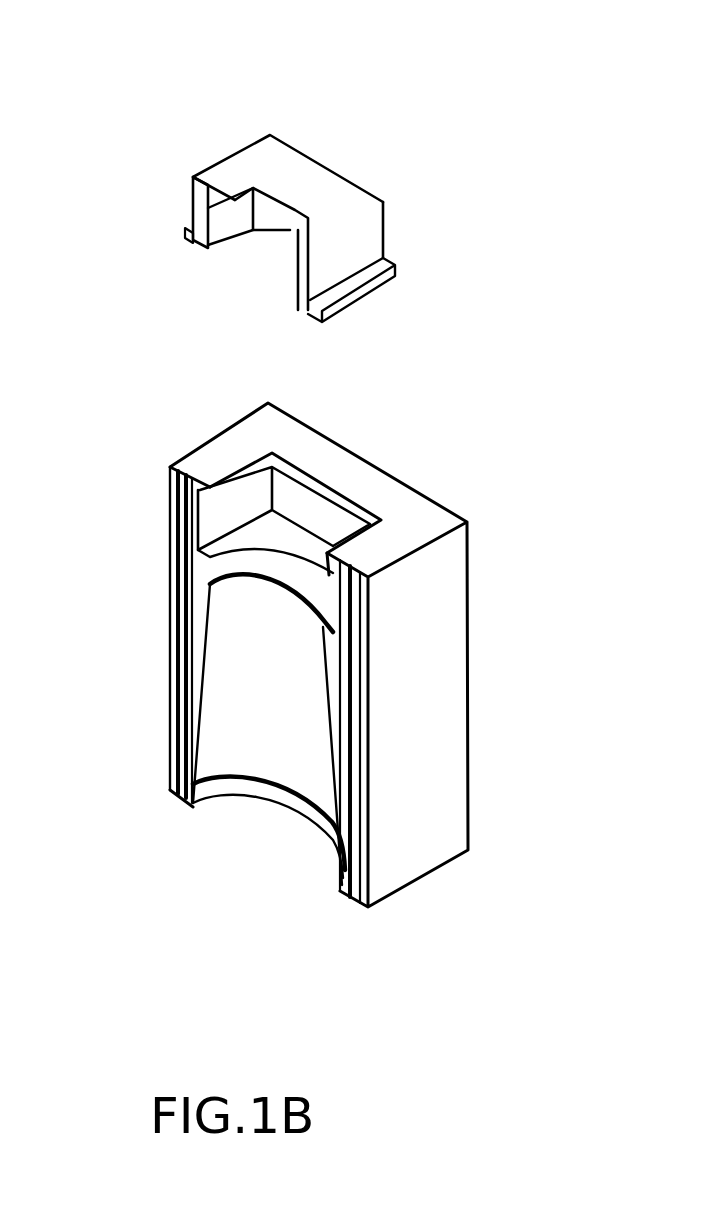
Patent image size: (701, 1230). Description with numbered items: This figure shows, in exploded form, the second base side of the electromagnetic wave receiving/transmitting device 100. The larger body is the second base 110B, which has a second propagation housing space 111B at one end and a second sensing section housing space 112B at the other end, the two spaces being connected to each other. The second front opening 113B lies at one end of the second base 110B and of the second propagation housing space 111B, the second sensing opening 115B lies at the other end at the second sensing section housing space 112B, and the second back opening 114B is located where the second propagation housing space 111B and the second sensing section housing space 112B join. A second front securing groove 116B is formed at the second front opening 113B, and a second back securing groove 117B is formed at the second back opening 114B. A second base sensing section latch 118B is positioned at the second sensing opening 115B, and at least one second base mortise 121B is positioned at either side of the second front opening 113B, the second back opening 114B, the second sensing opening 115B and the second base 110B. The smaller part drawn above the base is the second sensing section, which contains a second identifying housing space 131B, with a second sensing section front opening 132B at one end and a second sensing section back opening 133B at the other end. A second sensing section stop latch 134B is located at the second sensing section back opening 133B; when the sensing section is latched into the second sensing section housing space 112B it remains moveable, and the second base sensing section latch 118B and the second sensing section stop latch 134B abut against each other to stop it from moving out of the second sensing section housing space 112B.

The electromagnetic wave receiving/transmitting device 100 is at (430, 168).
The second identifying housing space 131B is at (222, 221).
The second sensing section front opening 132B is at (260, 258).
The second sensing section back opening 133B is at (200, 216).
The second sensing section stop latch 134B is at (258, 166).
The second base 110B is at (170, 678).
The second propagation housing space 111B is at (228, 748).
The second sensing section housing space 112B is at (230, 507).
The second front opening 113B is at (272, 818).
The second back opening 114B is at (268, 566).
The second sensing opening 115B is at (303, 490).
The second front securing groove 116B is at (196, 783).
The second back securing groove 117B is at (210, 585).
The second base sensing section latch 118B is at (200, 492).
The second base mortise 121B is at (172, 545).